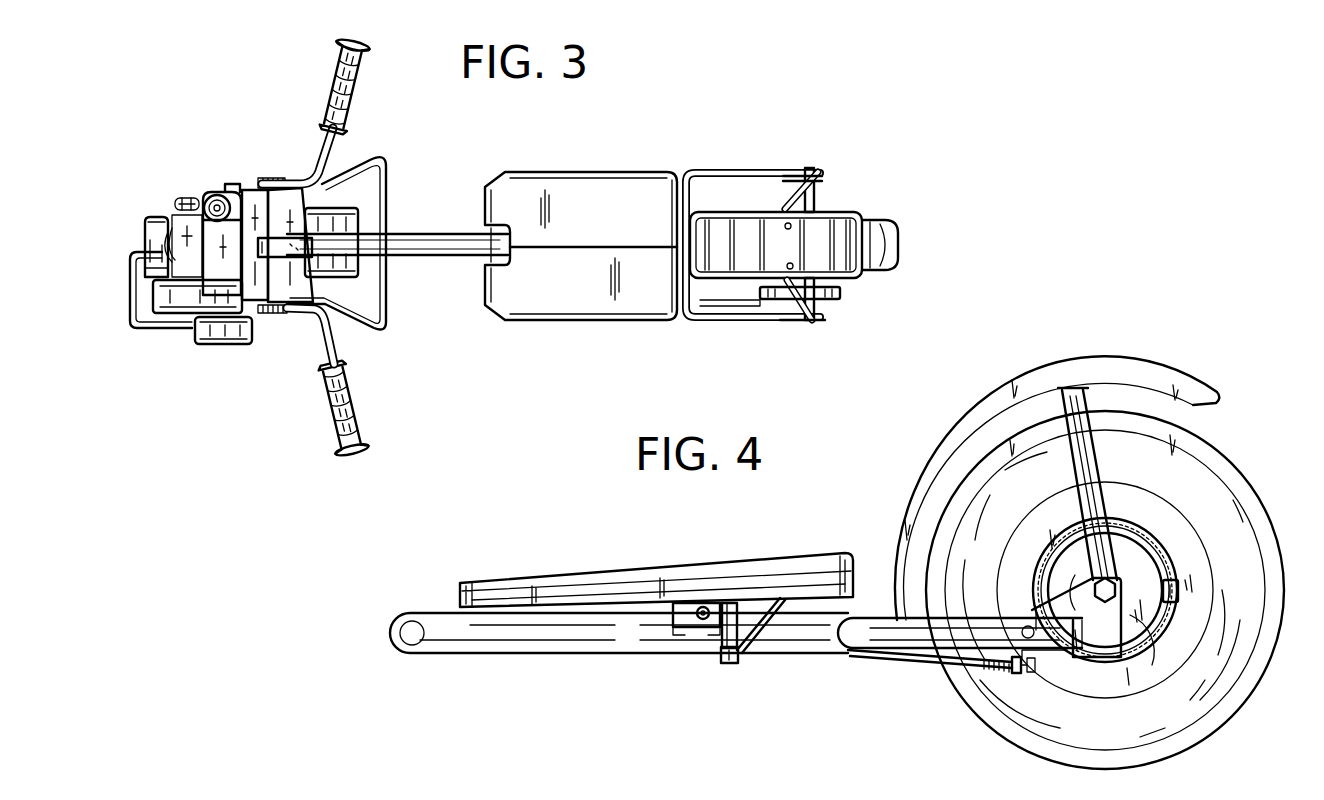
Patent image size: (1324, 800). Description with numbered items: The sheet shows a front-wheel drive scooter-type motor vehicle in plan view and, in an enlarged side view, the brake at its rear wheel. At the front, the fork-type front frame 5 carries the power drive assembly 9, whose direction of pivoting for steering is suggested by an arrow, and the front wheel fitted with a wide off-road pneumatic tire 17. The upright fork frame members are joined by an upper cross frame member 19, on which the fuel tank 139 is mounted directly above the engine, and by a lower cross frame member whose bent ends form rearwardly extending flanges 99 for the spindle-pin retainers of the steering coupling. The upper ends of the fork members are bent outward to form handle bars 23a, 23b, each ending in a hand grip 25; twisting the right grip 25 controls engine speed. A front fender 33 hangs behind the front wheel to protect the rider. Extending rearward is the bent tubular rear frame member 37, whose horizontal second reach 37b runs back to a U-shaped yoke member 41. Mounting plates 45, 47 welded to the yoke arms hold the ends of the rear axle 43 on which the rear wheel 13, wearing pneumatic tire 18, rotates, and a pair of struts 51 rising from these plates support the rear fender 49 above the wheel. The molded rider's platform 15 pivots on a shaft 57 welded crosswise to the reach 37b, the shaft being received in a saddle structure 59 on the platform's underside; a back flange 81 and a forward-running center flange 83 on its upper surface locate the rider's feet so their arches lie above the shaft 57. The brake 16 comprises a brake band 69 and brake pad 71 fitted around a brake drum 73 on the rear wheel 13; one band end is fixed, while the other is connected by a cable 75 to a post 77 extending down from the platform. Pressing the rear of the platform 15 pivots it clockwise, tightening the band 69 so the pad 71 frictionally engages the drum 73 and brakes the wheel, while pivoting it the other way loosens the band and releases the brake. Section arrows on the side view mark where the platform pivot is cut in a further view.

In FIG. 3, the power drive assembly 9 is at (130, 345).
In FIG. 4, the rear wheel 13 is at (1188, 620).
In FIG. 3, the rider's platform 15 is at (512, 322).
In FIG. 4, the rider's platform 15 is at (490, 582).
In FIG. 4, the brake 16 is at (1188, 560).
In FIG. 3, the front pneumatic tire 17 is at (160, 222).
In FIG. 3, the rear pneumatic tire 18 is at (902, 246).
In FIG. 4, the rear pneumatic tire 18 is at (1272, 680).
In FIG. 3, the upper cross frame member 19 is at (257, 200).
In FIG. 3, the handle bar 23a is at (332, 341).
In FIG. 3, the handle bar 23b is at (326, 160).
In FIG. 3, the hand grip 25 is at (352, 77).
In FIG. 3, the front fender 33 is at (345, 210).
In FIG. 3, the rear frame member 37 is at (420, 236).
In FIG. 4, the second reach 37b is at (482, 656).
In FIG. 3, the U-shaped yoke member 41 is at (690, 170).
In FIG. 3, the rear axle 43 is at (820, 195).
In FIG. 3, the mounting plate 45 is at (795, 323).
In FIG. 4, the mounting plate 45 is at (1086, 645).
In FIG. 3, the mounting plate 47 is at (810, 166).
In FIG. 3, the rear fender 49 is at (855, 214).
In FIG. 4, the rear fender 49 is at (1130, 356).
In FIG. 3, the strut 51 is at (795, 200).
In FIG. 4, the strut 51 is at (1097, 462).
In FIG. 4, the shaft 57 is at (704, 620).
In FIG. 4, the saddle structure 59 is at (678, 615).
In FIG. 3, the brake band 69 is at (840, 298).
In FIG. 4, the brake band 69 is at (1146, 534).
In FIG. 4, the brake pad 71 is at (1180, 577).
In FIG. 4, the brake drum 73 is at (1131, 616).
In FIG. 3, the cable 75 is at (716, 318).
In FIG. 4, the cable 75 is at (882, 655).
In FIG. 4, the post 77 is at (740, 650).
In FIG. 3, the back flange 81 is at (672, 178).
In FIG. 4, the back flange 81 is at (858, 560).
In FIG. 3, the center flange 83 is at (622, 245).
In FIG. 4, the center flange 83 is at (845, 552).
In FIG. 3, the flange 99 is at (292, 279).
In FIG. 3, the fuel tank 139 is at (214, 198).
In FIG. 4, the front frame 5 is at (670, 687).